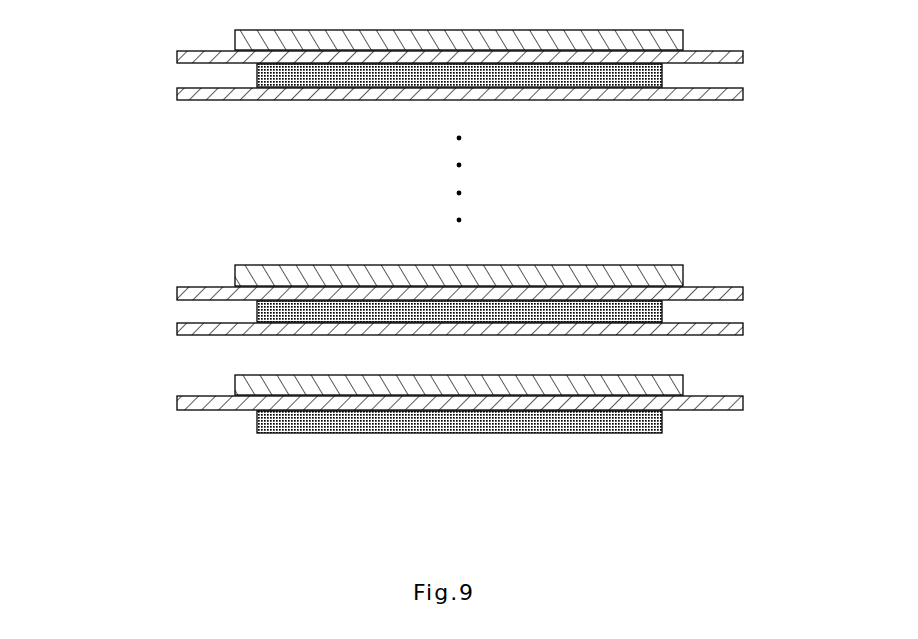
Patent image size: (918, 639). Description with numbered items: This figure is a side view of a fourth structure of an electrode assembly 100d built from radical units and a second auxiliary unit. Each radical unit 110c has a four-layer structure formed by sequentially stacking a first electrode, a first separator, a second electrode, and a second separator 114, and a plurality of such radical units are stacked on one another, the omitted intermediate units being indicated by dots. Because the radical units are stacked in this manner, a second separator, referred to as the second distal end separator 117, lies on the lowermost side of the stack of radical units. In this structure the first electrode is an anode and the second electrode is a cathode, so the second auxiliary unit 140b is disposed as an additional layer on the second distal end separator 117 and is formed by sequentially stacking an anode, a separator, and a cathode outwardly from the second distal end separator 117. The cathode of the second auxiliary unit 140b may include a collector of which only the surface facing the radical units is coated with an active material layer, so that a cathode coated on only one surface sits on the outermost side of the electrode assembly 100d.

The electrode assembly 100d is at (743, 28).
The radical unit 110c is at (100, 27).
The second separator 114 is at (178, 92).
The second distal end separator 117 is at (178, 328).
The second auxiliary unit 140b is at (102, 372).